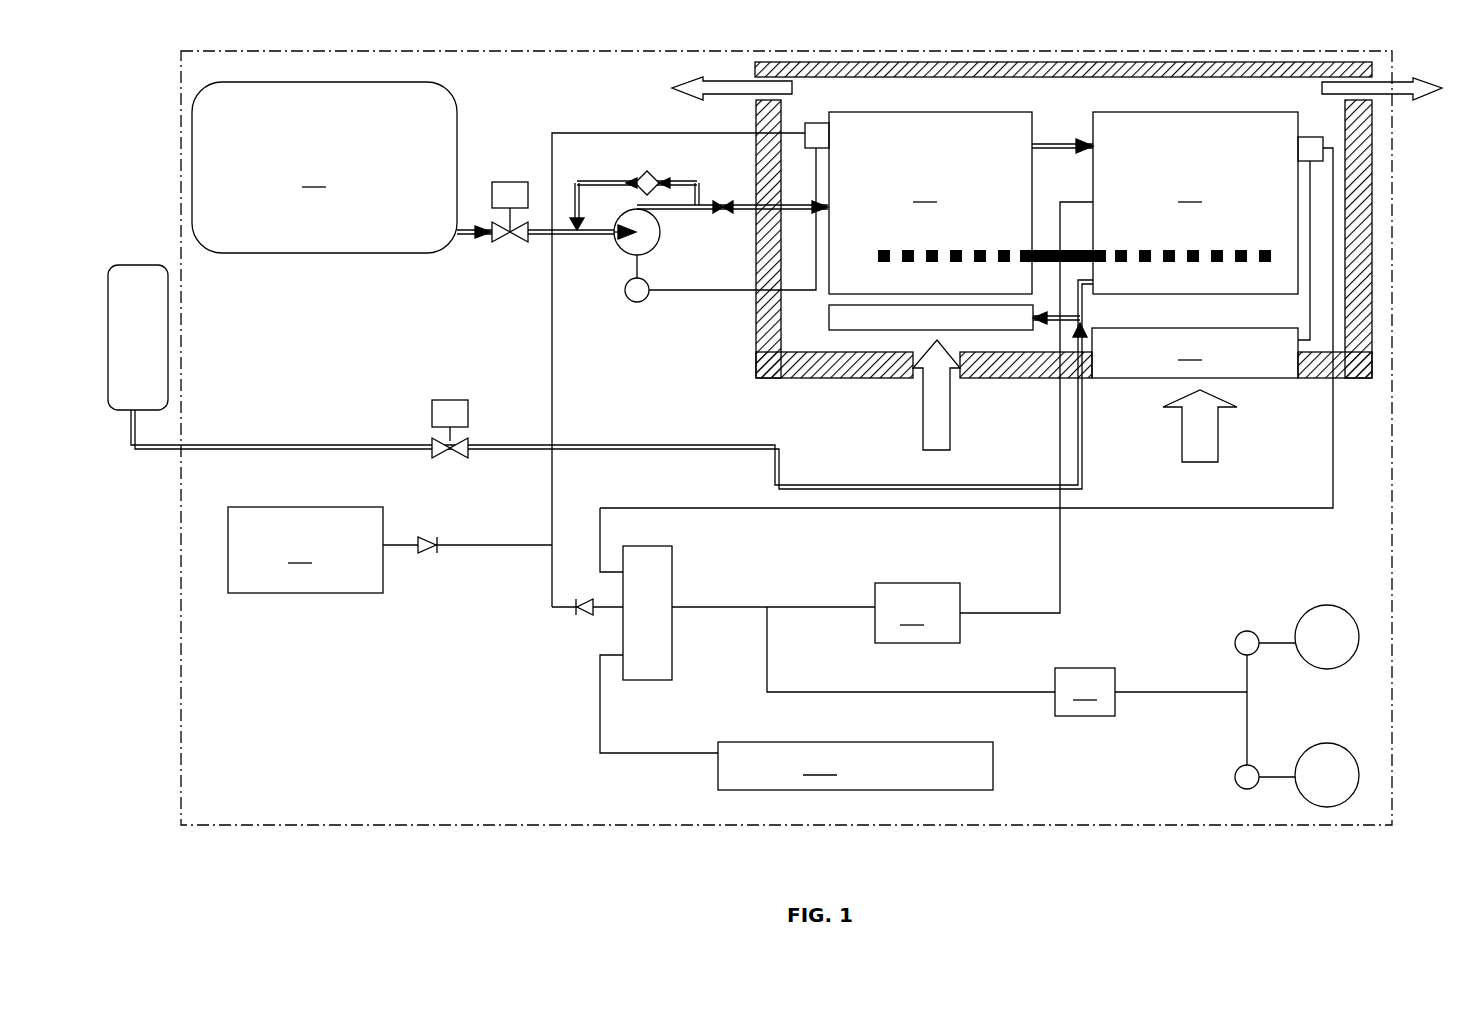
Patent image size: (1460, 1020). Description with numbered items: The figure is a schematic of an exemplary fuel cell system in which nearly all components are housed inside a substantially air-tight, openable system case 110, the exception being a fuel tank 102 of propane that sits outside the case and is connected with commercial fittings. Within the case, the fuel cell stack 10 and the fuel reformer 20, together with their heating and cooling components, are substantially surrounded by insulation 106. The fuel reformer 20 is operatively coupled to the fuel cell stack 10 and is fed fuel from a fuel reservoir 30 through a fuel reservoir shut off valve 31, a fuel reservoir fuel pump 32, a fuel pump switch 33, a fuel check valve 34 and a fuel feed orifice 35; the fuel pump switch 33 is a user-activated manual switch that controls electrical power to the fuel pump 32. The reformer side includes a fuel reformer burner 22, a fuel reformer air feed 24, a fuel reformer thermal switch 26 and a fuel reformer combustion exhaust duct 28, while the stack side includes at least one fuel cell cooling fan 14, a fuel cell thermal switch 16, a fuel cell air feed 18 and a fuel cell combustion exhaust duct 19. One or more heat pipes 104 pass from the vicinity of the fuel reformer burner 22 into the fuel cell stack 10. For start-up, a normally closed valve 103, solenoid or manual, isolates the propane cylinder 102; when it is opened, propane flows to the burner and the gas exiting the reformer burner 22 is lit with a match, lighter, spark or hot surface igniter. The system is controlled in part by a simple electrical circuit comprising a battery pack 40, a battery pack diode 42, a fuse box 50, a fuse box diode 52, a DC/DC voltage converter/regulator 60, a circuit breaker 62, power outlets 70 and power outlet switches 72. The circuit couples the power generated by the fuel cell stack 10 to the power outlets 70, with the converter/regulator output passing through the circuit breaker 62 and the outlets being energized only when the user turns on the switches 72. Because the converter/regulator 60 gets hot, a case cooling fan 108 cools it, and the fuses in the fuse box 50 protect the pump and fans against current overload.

The system case 110 is at (745, 50).
The insulation 106 is at (1290, 72).
The fuel reservoir 30 is at (324, 167).
The fuel reservoir shut off valve 31 is at (505, 182).
The fuel reservoir fuel pump 32 is at (657, 229).
The fuel pump switch 33 is at (641, 303).
The fuel check valve 34 is at (645, 170).
The fuel feed orifice 35 is at (728, 200).
The fuel reformer thermal switch 26 is at (808, 123).
The fuel reformer 20 is at (930, 203).
The fuel cell stack 10 is at (1165, 203).
The heat pipes 104 is at (1043, 250).
The fuel cell thermal switch 16 is at (1316, 136).
The fuel cell combustion exhaust duct 19 is at (1440, 100).
The fuel reformer combustion exhaust duct 28 is at (673, 77).
The fuel reformer burner 22 is at (860, 330).
The fuel reformer air feed 24 is at (950, 440).
The fuel cell air feed 18 is at (1212, 450).
The fuel cell cooling fan 14 is at (1195, 353).
The fuel tank 102 is at (168, 300).
The valve 103 is at (440, 400).
The battery pack 40 is at (390, 550).
The battery pack diode 42 is at (425, 555).
The fuse box diode 52 is at (582, 613).
The fuse box 50 is at (672, 580).
The DC/DC voltage converter/regulator 60 is at (917, 613).
The circuit breaker 62 is at (1007, 661).
The power outlet switch 72 is at (1235, 637).
The power outlet 70 is at (1320, 606).
The case cooling fan 108 is at (855, 766).